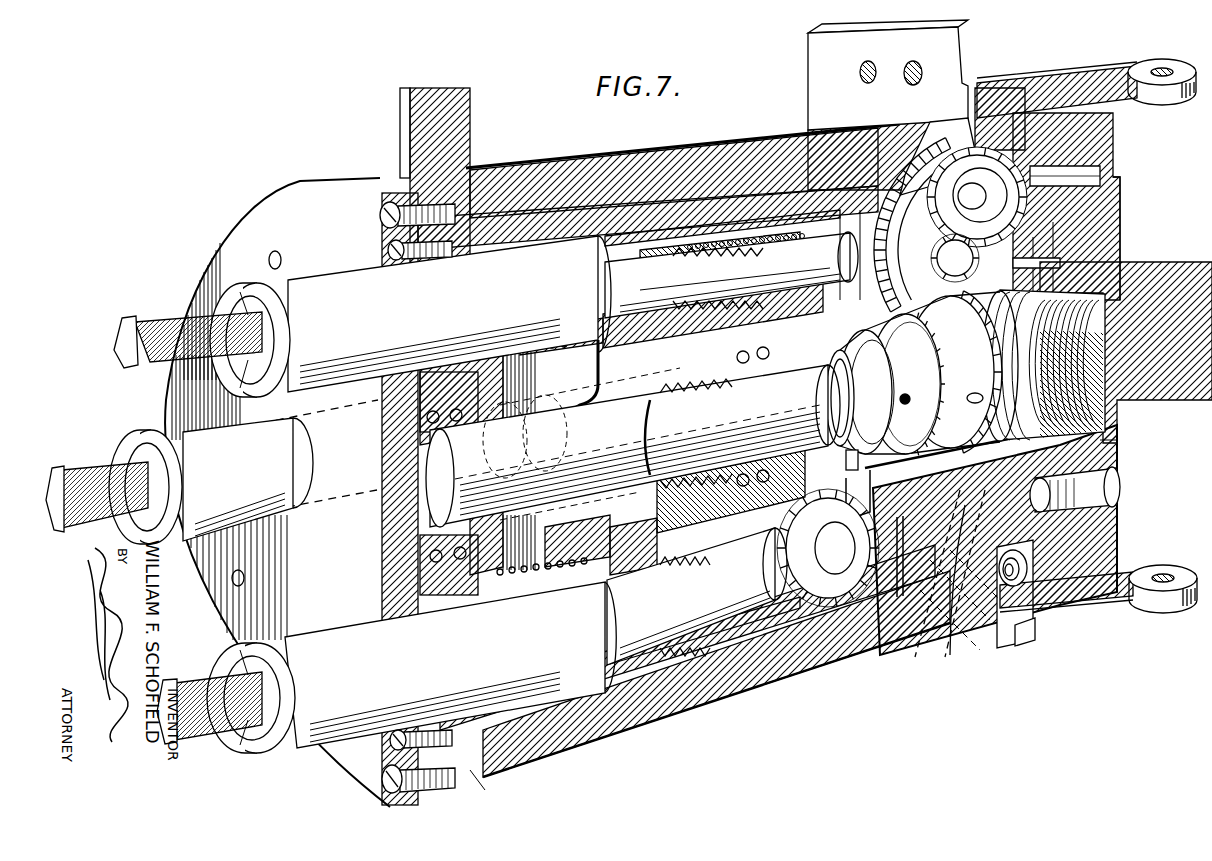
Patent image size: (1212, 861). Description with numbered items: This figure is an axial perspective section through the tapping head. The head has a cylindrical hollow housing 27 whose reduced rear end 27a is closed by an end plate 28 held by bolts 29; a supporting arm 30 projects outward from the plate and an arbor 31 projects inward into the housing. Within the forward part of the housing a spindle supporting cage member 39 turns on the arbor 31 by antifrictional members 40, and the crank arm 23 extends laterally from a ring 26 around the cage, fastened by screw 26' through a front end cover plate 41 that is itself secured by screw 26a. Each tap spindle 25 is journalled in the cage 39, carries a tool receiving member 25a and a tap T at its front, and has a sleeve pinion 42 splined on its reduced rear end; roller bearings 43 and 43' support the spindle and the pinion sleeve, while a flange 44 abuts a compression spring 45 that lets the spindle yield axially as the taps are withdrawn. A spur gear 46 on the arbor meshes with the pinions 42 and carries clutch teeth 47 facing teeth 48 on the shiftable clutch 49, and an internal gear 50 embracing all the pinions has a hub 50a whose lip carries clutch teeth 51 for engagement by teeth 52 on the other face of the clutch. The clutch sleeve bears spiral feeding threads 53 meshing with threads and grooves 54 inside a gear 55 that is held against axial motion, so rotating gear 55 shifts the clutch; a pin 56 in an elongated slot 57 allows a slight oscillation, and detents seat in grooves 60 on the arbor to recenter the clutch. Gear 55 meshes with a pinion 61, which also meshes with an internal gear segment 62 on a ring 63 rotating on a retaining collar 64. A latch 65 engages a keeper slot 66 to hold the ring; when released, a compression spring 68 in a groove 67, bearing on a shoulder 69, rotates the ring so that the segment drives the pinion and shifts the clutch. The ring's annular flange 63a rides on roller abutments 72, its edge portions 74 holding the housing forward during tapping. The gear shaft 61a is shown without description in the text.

The crank arm 23 is at (466, 125).
The tap spindle 25 is at (360, 318).
The tool receiving member 25a is at (268, 262).
The ring 26 is at (466, 790).
The screw 26' is at (377, 506).
The screw 26a is at (284, 236).
The housing 27 is at (490, 175).
The reduced rear end of housing 27a is at (1055, 222).
The end plate 28 is at (1110, 196).
The bolt 29 is at (1120, 471).
The supporting arm 30 is at (1175, 280).
The arbor 31 is at (572, 480).
The spindle supporting cage member 39 is at (662, 210).
The antifrictional member 40 is at (382, 424).
The front end cover plate 41 is at (178, 405).
The sleeve pinion 42 is at (756, 192).
The roller bearing 43 is at (620, 472).
The roller bearing 43' is at (722, 473).
The flange 44 is at (596, 356).
The compression spring 45 is at (534, 256).
The spur gear 46 is at (834, 372).
The clutch teeth 47 is at (848, 480).
The clutch teeth 48 is at (988, 360).
The shiftable clutch 49 is at (913, 364).
The internal gear 50 is at (820, 180).
The hub 50a is at (946, 268).
The clutch teeth 51 is at (962, 308).
The clutch teeth 52 is at (980, 340).
The spiral feeding threads 53 is at (1117, 403).
The threads and grooves 54 is at (1035, 262).
The gear 55 is at (1032, 238).
The pin 56 is at (972, 393).
The elongated slot 57 is at (903, 396).
The groove 60 is at (872, 462).
The pinion 61 is at (952, 196).
The gear shaft 61a is at (1062, 168).
The internal gear segment 62 is at (985, 238).
The ring 63 is at (1040, 85).
The annular flange 63a is at (1085, 75).
The retaining collar 64 is at (1098, 158).
The latch 65 is at (810, 72).
The keeper slot 66 is at (970, 127).
The groove 67 is at (1017, 634).
The compression spring 68 is at (1008, 600).
The shoulder 69 is at (913, 660).
The roller abutment 72 is at (1170, 92).
The edge portion 74 is at (1150, 62).
The tap T is at (145, 343).